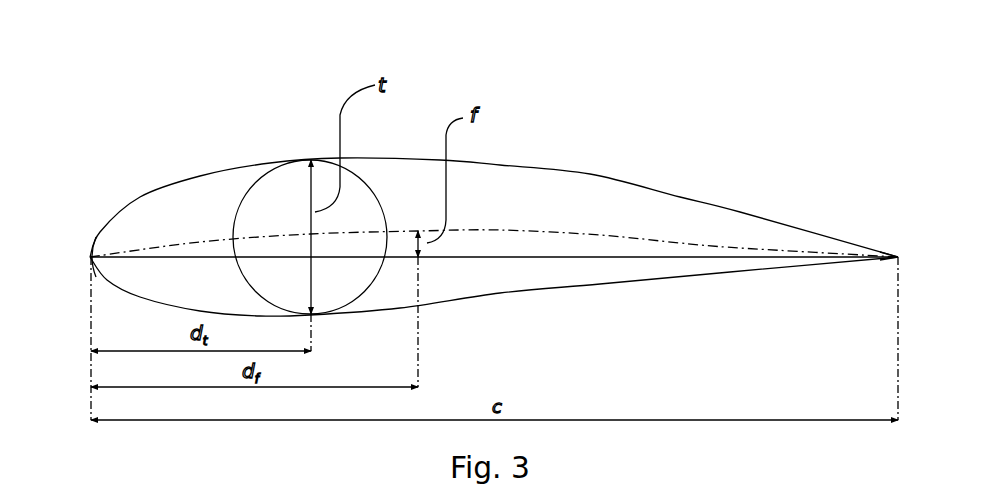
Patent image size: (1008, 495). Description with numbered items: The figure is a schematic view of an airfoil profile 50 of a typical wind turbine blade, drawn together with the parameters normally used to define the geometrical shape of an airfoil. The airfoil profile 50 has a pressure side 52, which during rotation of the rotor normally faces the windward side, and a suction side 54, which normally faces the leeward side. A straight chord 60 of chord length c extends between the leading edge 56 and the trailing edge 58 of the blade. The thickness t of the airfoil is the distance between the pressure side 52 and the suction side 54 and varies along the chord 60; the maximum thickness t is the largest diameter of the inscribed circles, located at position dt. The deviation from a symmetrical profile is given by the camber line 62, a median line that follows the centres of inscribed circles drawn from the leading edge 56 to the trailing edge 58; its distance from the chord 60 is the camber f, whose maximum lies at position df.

The airfoil profile 50 is at (472, 78).
The pressure side 52 is at (652, 285).
The suction side 54 is at (590, 173).
The leading edge 56 is at (88, 256).
The trailing edge 58 is at (898, 257).
The chord 60 is at (693, 257).
The camber line 62 is at (483, 230).